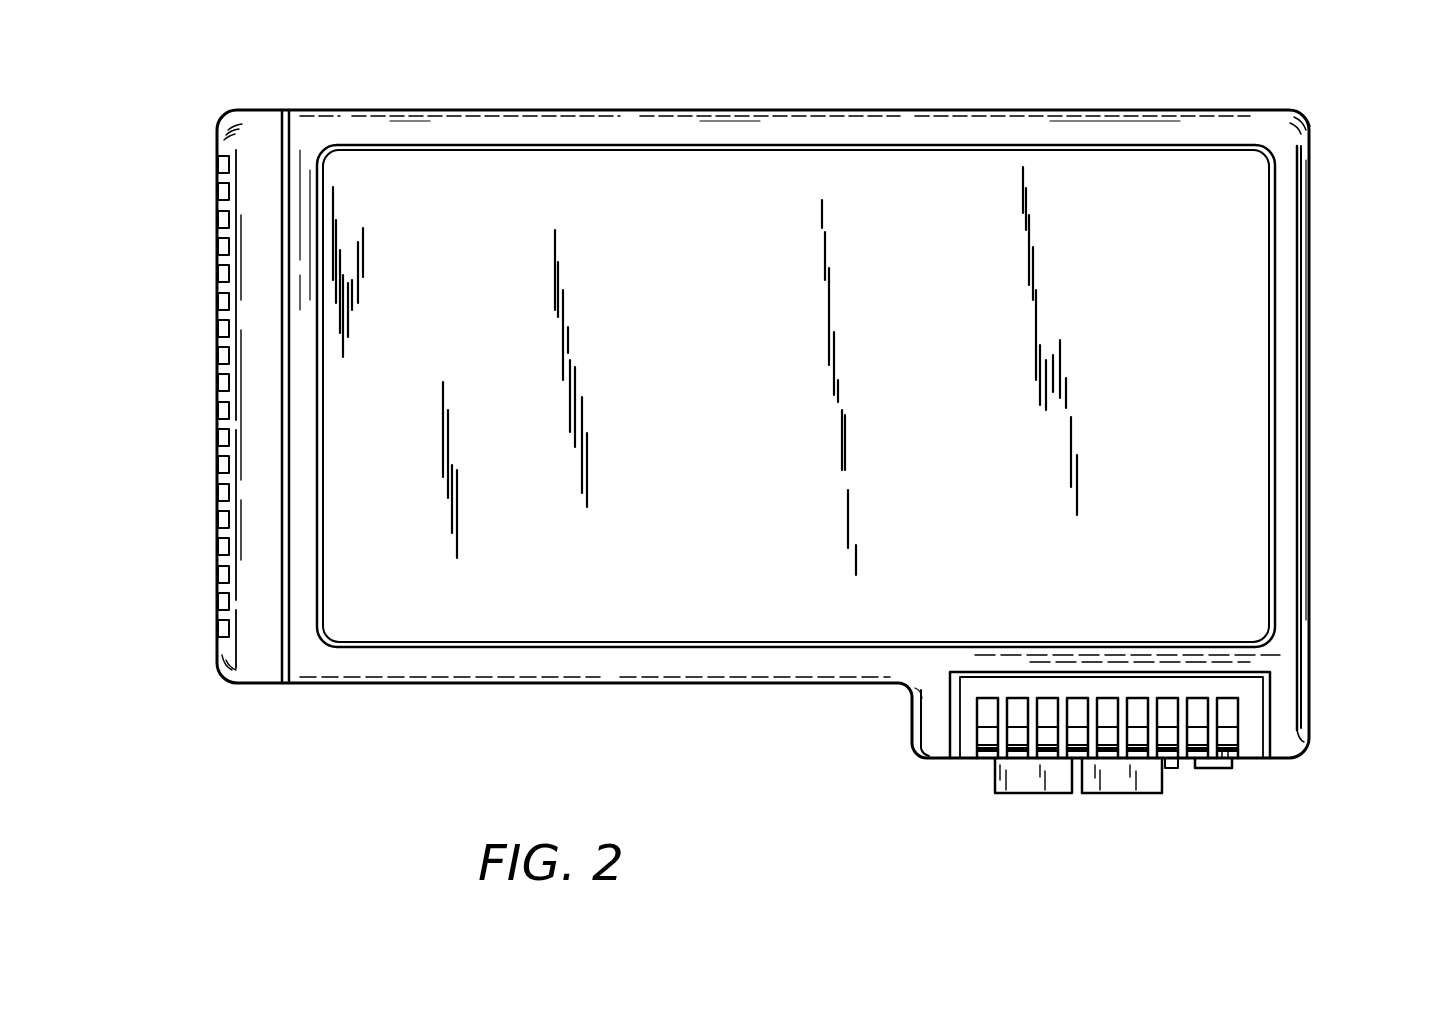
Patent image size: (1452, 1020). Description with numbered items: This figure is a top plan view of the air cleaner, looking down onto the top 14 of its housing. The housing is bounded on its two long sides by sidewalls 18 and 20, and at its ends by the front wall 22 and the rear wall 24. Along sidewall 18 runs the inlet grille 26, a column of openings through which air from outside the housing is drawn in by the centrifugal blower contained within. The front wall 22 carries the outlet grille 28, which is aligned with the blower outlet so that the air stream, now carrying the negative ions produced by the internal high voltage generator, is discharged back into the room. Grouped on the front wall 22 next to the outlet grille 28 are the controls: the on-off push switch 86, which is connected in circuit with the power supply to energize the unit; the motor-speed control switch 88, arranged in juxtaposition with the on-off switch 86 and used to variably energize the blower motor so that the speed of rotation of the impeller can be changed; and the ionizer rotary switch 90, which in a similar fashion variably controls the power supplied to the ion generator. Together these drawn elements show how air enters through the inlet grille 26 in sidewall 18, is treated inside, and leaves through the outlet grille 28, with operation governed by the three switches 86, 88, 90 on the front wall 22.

The top 14 is at (770, 332).
The sidewall 18 is at (215, 233).
The sidewall 20 is at (1311, 358).
The front wall 22 is at (590, 685).
The rear wall 24 is at (848, 108).
The inlet grille 26 is at (217, 312).
The outlet grille 28 is at (1231, 698).
The on-off push switch 86 is at (1215, 768).
The motor-speed control switch 88 is at (1132, 793).
The ionizer rotary switch 90 is at (1045, 793).